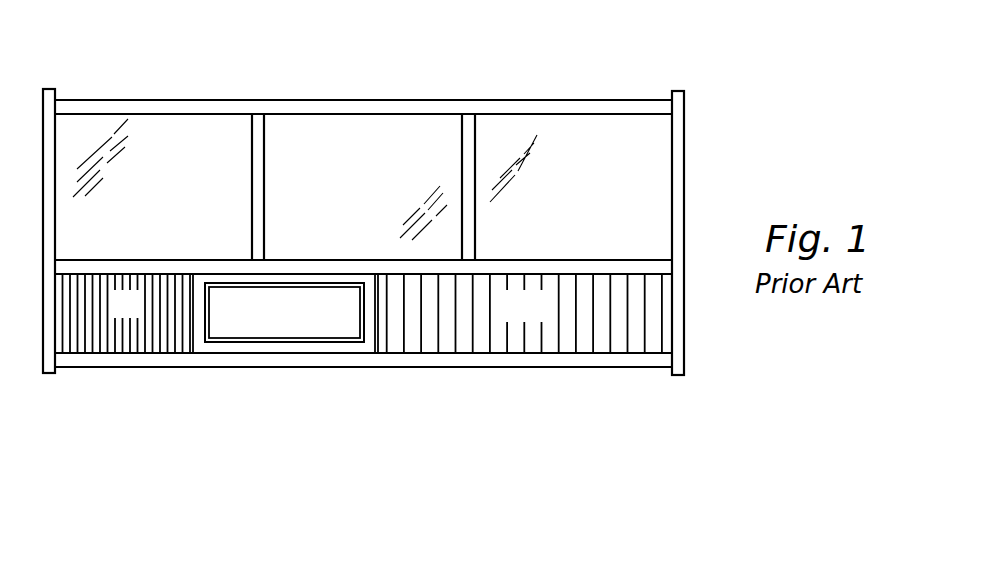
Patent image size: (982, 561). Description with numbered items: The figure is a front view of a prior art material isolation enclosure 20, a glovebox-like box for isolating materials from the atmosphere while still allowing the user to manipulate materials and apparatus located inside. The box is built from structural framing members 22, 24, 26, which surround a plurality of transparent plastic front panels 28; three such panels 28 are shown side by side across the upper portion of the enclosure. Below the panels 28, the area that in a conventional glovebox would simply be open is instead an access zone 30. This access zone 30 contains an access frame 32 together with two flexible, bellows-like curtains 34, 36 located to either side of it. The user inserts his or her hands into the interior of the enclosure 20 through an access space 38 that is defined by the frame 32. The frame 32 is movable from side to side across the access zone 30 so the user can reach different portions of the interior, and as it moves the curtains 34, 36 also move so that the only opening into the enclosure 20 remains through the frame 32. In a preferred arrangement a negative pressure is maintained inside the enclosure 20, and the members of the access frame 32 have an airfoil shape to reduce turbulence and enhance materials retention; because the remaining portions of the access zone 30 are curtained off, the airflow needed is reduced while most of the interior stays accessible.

The enclosure 20 is at (405, 89).
The structural framing member 22 is at (588, 99).
The structural framing member 24 is at (612, 260).
The structural framing member 26 is at (252, 147).
The transparent plastic front panel 28 is at (139, 191).
The access zone 30 is at (515, 353).
The access frame 32 is at (323, 353).
The flexible bellows-like curtain 34 is at (112, 314).
The flexible bellows-like curtain 36 is at (515, 314).
The access space 38 is at (262, 314).